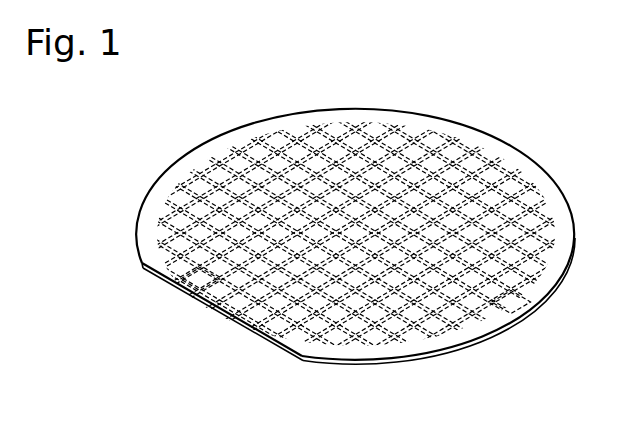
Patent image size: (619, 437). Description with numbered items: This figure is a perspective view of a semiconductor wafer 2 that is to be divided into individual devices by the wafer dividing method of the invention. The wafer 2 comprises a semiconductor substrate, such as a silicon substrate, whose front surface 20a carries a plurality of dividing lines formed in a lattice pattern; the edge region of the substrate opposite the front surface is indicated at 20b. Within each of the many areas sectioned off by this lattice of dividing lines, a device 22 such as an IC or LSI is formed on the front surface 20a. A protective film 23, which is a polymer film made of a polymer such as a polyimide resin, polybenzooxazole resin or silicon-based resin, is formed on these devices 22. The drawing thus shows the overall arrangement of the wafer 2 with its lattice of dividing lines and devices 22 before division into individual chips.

The semiconductor wafer 2 is at (433, 95).
The front surface 20a is at (493, 148).
The back surface of wafer 20b is at (399, 363).
The device 22 is at (264, 341).
The protective film 23 is at (310, 119).